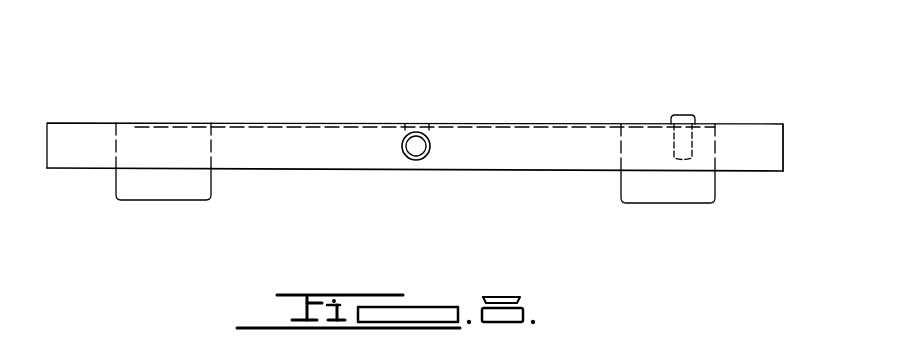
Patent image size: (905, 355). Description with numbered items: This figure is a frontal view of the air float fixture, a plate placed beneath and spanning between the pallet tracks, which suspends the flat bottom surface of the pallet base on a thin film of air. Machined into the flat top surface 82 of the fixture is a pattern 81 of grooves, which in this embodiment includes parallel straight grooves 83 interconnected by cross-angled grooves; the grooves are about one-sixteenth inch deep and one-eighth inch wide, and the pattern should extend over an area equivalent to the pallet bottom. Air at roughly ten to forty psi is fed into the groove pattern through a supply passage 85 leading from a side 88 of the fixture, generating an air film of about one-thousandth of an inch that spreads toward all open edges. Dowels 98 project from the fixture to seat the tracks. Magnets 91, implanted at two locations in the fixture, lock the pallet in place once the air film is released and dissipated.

The pattern of grooves 81 is at (525, 120).
The flat top surface 82 is at (740, 123).
The parallel straight grooves 83 is at (297, 122).
The supply passage 85 is at (416, 148).
The side of the fixture 88 is at (547, 157).
The magnets 91 is at (150, 192).
The dowels 98 is at (680, 113).